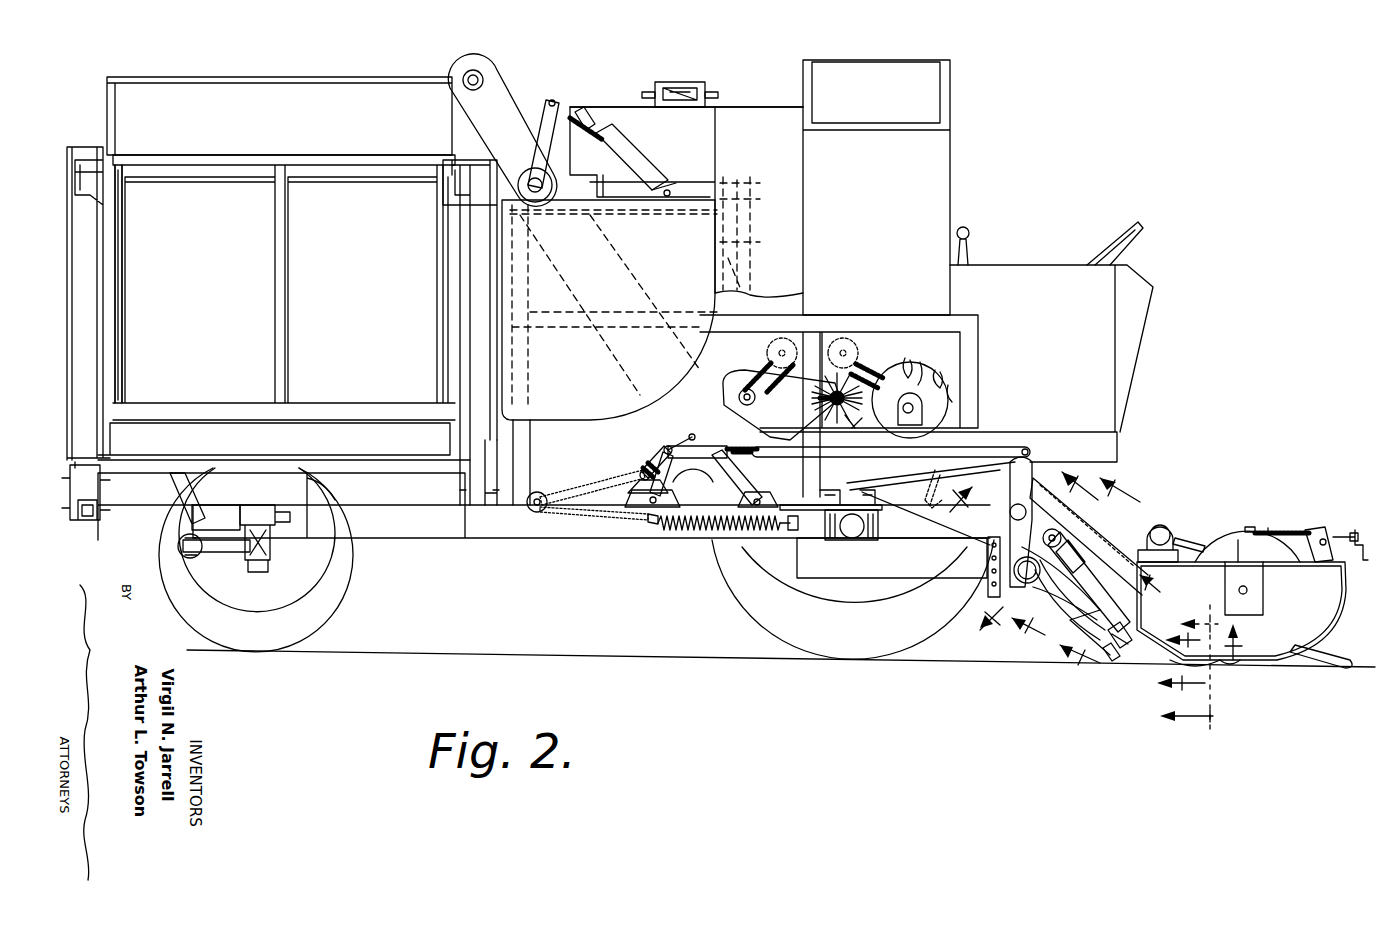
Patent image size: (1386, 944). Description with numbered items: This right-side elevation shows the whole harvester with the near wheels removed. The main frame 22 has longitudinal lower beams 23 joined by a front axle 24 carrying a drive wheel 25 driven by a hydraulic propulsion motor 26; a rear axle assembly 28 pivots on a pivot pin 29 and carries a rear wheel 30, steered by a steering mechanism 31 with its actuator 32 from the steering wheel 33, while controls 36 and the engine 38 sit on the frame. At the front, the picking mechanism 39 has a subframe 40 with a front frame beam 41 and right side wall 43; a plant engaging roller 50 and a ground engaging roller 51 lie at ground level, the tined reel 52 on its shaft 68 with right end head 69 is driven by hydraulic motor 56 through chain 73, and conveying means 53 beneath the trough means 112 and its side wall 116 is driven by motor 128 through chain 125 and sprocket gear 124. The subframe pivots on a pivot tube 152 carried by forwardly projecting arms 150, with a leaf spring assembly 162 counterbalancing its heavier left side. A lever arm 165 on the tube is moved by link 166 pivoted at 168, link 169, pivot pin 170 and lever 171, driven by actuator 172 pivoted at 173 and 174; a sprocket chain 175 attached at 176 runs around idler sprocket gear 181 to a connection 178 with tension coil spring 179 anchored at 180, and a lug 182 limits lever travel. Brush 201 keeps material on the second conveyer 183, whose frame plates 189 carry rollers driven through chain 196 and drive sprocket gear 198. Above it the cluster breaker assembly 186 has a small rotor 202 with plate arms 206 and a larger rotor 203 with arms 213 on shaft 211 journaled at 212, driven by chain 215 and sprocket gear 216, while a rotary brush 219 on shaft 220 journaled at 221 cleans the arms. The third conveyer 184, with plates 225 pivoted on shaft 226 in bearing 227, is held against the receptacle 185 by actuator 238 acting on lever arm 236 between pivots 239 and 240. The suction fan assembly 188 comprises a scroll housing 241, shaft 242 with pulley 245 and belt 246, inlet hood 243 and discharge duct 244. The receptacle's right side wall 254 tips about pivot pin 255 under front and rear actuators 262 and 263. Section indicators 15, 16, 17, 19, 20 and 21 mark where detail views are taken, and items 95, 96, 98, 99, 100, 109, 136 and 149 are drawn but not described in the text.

The main frame 22 is at (448, 542).
The longitudinal lower beams 23 is at (532, 542).
The front axle 24 is at (853, 548).
The drive wheel 25 is at (748, 618).
The hydraulic propulsion motor 26 is at (684, 502).
The rear axle assembly 28 is at (280, 565).
The pivot pin 29 is at (228, 512).
The rear wheel 30 is at (318, 625).
The steering mechanism 31 is at (215, 562).
The piston and cylinder type actuator 32 is at (190, 560).
The steering wheel 33 is at (1138, 222).
The controls 36 is at (978, 210).
The engine 38 is at (876, 187).
The picking mechanism 39 is at (1277, 520).
The subframe 40 is at (1070, 638).
The front frame beam 41 is at (1122, 645).
The right front side wall 43 is at (1241, 611).
The plant engaging roller 50 is at (1225, 668).
The ground engaging roller 51 is at (1176, 662).
The tined reel 52 is at (1245, 530).
The conveyer means 53 is at (1047, 475).
The hydraulic motor 56 is at (1166, 527).
The shaft 68 is at (1248, 590).
The right end head 69 is at (1228, 545).
The endless sprocket chain 73 is at (1203, 545).
The adjusting nut 95 is at (1250, 527).
The threaded rod 96 is at (1292, 524).
The crank handle 98 is at (1360, 535).
The bracket block 99 is at (1310, 528).
The pivot pin 100 is at (1326, 538).
The skid shoe 109 is at (1338, 650).
The trough means 112 is at (1107, 528).
The side wall 116 is at (1080, 597).
The driven sprocket gear 124 is at (1043, 538).
The endless sprocket chain 125 is at (1065, 500).
The hydraulic motor 128 is at (1068, 540).
The support link 136 is at (1080, 602).
The pivot pin 149 is at (1040, 445).
The forwardly projecting arms 150 is at (1000, 575).
The pivot tube 152 is at (1032, 585).
The counterbalancing leaf spring assembly 162 is at (1113, 662).
The lever arm 165 is at (1020, 450).
The link 166 is at (636, 489).
The pivot 168 is at (645, 518).
The link 169 is at (768, 456).
The pivot pin 170 is at (666, 444).
The lever 171 is at (648, 470).
The piston and cylinder hydraulic type actuator 172 is at (730, 452).
The pivot 173 is at (749, 478).
The pivot 174 is at (688, 430).
The sprocket chain 175 is at (570, 485).
The pivotal connection 176 is at (640, 468).
The connection 178 is at (656, 526).
The tension coil spring 179 is at (702, 532).
The anchorage 180 is at (792, 532).
The idler sprocket gear 181 is at (545, 510).
The stop lug 182 is at (648, 458).
The second conveyer means 183 is at (731, 374).
The third conveyer means 184 is at (502, 48).
The receptacle 185 is at (184, 70).
The cluster breaker assembly 186 is at (966, 358).
The suction fan assembly 188 is at (755, 103).
The frame plates 189 is at (725, 392).
The sprocket chain 196 is at (758, 356).
The drive sprocket gear 198 is at (768, 340).
The brush 201 is at (975, 528).
The front small rotor 202 is at (980, 480).
The rear larger rotor 203 is at (956, 392).
The plate arms 206 is at (934, 492).
The shaft 211 is at (910, 402).
The journals 212 is at (908, 418).
The plate arms 213 is at (906, 362).
The sprocket chain 215 is at (893, 345).
The drive sprocket gear 216 is at (856, 340).
The rotary brush 219 is at (853, 426).
The brush shaft 220 is at (826, 405).
The journals 221 is at (830, 390).
The plates 225 is at (466, 58).
The shaft 226 is at (538, 200).
The bearing 227 is at (530, 178).
The lever arm 236 is at (546, 124).
The piston and cylinder hydraulic type actuator 238 is at (645, 153).
The pivotal connection 239 is at (553, 98).
The pivotal anchor 240 is at (666, 198).
The scroll housing 241 is at (600, 107).
The vertical shaft 242 is at (665, 70).
The inlet hood 243 is at (752, 243).
The discharge duct 244 is at (818, 153).
The driven pulley 245 is at (655, 85).
The endless belt 246 is at (700, 88).
The right side wall 254 is at (284, 307).
The pivot pin 255 is at (88, 147).
The front actuator 262 is at (468, 302).
The rear actuator 263 is at (92, 324).
The section line 15 is at (1048, 563).
The section line 16 is at (1088, 571).
The section line 17 is at (1121, 637).
The section line 19 is at (1106, 573).
The section line 20 is at (1187, 664).
The section line 21 is at (1191, 670).